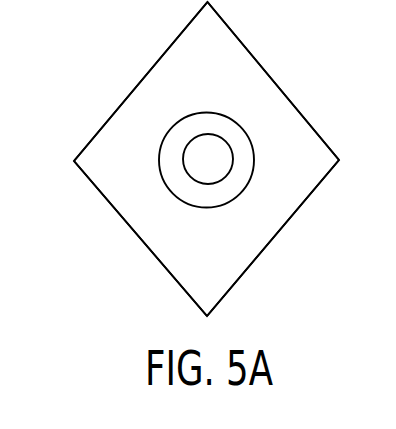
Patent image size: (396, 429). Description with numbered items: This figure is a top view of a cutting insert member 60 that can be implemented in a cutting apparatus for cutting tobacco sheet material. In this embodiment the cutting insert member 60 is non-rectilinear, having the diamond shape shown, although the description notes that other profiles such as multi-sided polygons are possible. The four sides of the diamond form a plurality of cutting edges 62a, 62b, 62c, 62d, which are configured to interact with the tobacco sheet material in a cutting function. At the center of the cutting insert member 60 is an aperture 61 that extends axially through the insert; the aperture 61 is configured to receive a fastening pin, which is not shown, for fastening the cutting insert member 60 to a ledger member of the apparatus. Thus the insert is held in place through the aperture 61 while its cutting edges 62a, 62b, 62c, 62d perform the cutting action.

The cutting insert member 60 is at (112, 131).
The aperture 61 is at (207, 161).
The cutting edge 62a is at (139, 82).
The cutting edge 62b is at (276, 82).
The cutting edge 62c is at (278, 235).
The cutting edge 62d is at (139, 235).